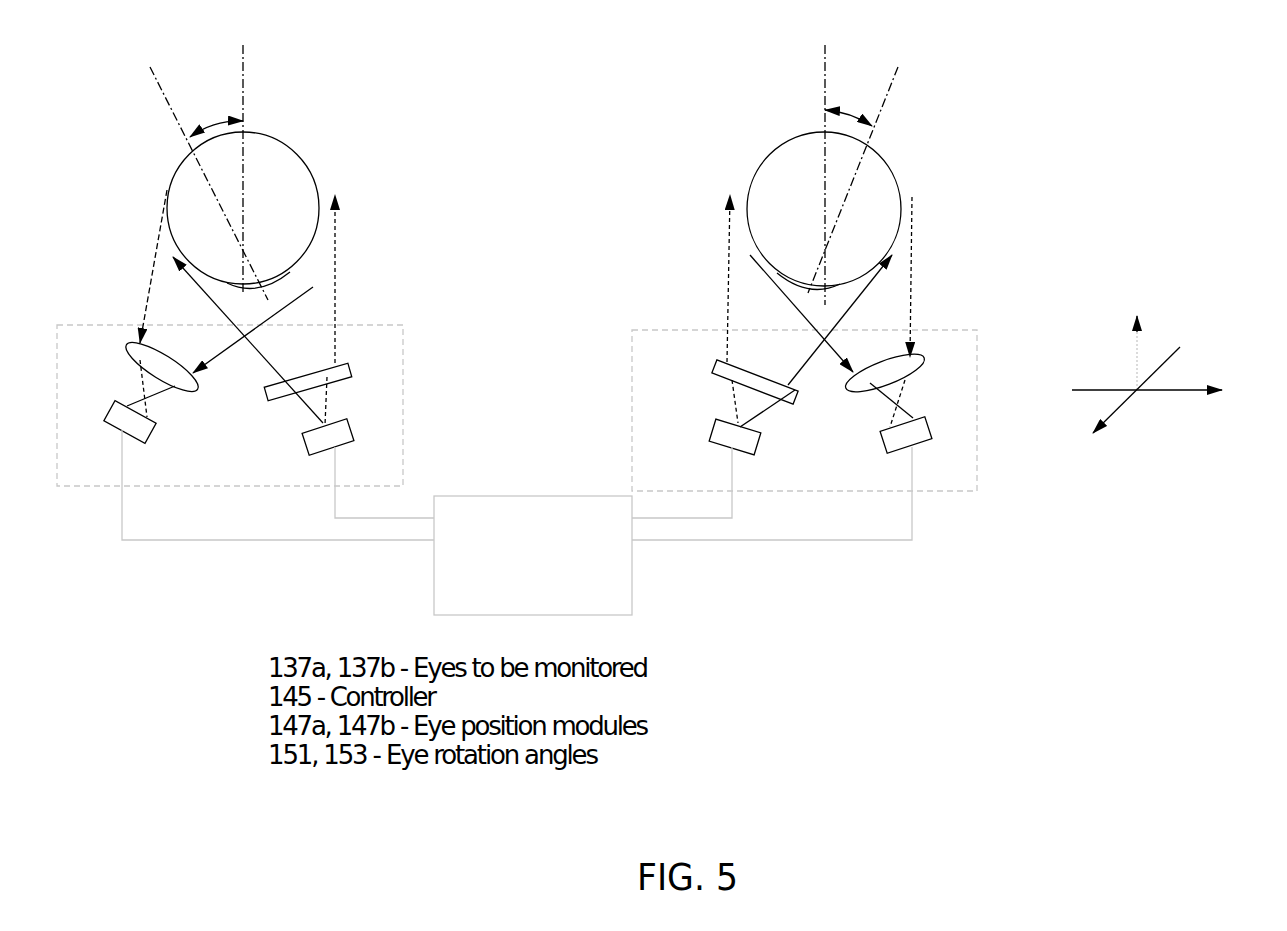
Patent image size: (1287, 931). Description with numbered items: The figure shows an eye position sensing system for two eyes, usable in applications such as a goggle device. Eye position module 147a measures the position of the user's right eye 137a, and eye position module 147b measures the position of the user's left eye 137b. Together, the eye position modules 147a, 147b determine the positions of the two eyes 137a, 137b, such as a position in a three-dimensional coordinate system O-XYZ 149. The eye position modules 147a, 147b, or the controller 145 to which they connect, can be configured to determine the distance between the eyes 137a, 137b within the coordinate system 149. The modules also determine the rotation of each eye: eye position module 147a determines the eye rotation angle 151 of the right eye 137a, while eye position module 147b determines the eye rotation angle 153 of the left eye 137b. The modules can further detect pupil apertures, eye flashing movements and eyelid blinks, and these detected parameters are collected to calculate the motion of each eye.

The right eye 137a is at (268, 200).
The left eye 137b is at (810, 213).
The controller 145 is at (632, 585).
The eye position module 147a is at (403, 340).
The eye position module 147b is at (632, 338).
The 3-D coordinate system O-XYZ 149 is at (1155, 355).
The eye rotation angle 151 is at (213, 120).
The eye rotation angle 153 is at (850, 110).